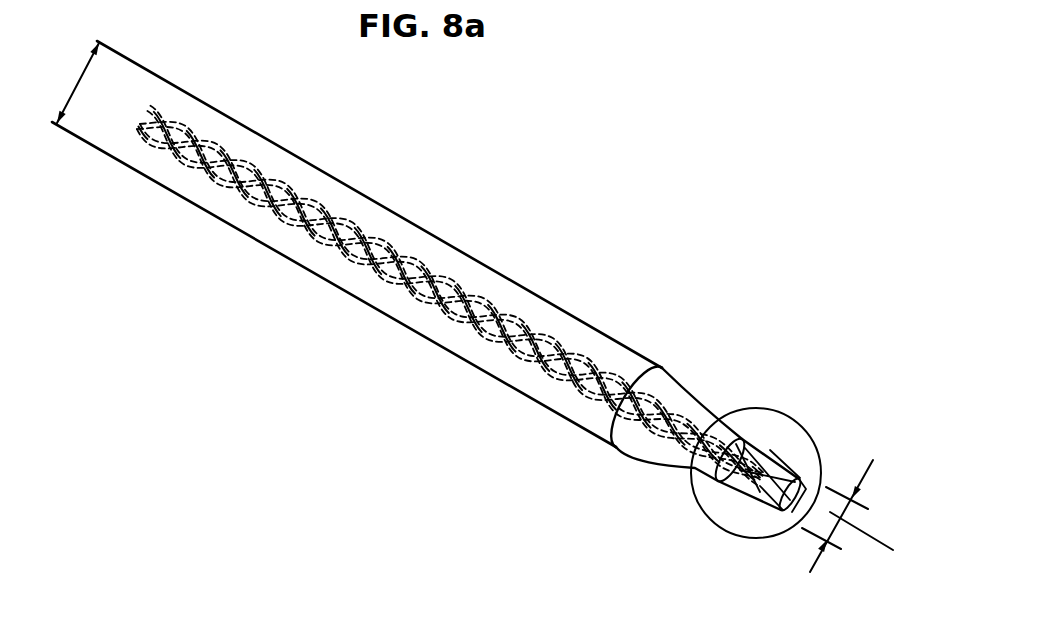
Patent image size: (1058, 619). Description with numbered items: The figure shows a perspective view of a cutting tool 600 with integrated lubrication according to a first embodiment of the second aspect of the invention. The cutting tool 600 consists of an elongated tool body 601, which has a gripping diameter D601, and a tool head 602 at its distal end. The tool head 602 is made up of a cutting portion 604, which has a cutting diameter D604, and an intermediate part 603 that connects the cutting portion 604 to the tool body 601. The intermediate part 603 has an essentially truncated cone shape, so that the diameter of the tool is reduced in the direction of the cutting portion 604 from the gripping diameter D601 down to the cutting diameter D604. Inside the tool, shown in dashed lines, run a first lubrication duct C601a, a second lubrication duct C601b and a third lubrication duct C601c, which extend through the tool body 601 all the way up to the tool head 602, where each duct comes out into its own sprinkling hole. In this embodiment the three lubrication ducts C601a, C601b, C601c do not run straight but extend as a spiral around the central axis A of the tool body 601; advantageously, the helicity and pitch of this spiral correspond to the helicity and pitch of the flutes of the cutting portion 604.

The cutting tool 600 is at (472, 182).
The tool body 601 is at (515, 258).
The tool head 602 is at (668, 476).
The intermediate part 603 is at (741, 417).
The cutting portion 604 is at (771, 455).
The first lubrication duct C601a is at (125, 166).
The second lubrication duct C601b is at (133, 131).
The third lubrication duct C601c is at (150, 108).
The gripping diameter D601 is at (56, 83).
The cutting diameter D604 is at (840, 518).
The central axis A is at (875, 543).